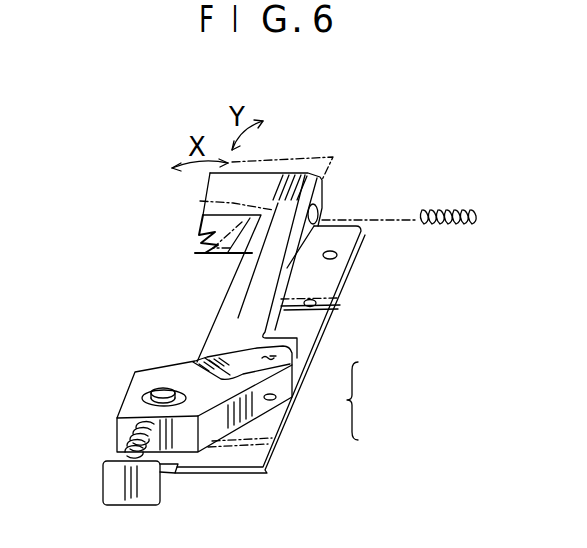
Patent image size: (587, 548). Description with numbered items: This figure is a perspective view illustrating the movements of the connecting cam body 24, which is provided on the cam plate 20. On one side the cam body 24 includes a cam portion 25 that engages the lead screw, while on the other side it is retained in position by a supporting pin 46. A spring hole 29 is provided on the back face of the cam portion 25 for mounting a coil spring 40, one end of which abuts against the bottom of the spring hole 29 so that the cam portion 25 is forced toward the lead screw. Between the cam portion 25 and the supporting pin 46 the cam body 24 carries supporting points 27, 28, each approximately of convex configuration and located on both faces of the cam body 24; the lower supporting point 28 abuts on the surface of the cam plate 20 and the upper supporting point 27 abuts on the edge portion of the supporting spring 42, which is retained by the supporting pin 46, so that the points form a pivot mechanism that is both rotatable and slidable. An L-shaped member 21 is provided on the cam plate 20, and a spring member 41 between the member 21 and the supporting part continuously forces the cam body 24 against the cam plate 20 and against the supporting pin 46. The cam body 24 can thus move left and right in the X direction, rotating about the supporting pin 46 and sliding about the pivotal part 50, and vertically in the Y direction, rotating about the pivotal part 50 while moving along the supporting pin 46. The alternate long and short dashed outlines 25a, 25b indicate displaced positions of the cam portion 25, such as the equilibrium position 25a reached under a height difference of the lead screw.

The cam plate 20 is at (222, 478).
The L-shaped member 21 is at (102, 483).
The connecting cam body 24 is at (228, 291).
The cam portion 25 is at (216, 233).
The equilibrium position of the cam portion 25a is at (286, 152).
The clip position b 25b is at (200, 202).
The upper supporting point 27 is at (305, 358).
The lower supporting point 28 is at (273, 399).
The spring hole 29 is at (318, 214).
The coil spring 40 is at (441, 207).
The spring member 41 is at (128, 433).
The supporting spring 42 is at (178, 382).
The supporting pin 46 is at (153, 394).
The pivotal part 50 is at (372, 401).